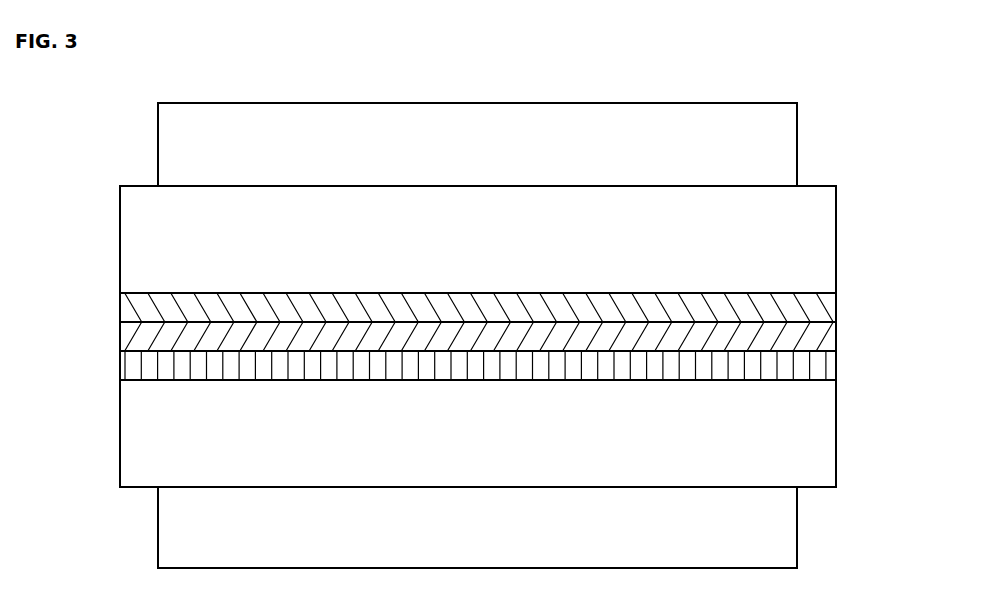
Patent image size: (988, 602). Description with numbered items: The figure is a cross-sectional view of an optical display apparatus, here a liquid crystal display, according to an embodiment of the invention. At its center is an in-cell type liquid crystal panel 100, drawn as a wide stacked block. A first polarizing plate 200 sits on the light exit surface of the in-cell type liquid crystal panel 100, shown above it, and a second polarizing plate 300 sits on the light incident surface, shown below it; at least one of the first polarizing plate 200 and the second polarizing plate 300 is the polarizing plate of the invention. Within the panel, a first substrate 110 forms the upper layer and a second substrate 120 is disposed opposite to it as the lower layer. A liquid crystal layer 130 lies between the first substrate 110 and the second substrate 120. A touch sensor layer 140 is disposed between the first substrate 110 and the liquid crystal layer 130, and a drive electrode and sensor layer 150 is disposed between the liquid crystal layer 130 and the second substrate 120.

The in-cell type liquid crystal panel 100 is at (848, 187).
The first substrate 110 is at (137, 232).
The second substrate 120 is at (127, 445).
The liquid crystal layer 130 is at (128, 340).
The touch sensor layer 140 is at (128, 306).
The drive electrode and sensor layer 150 is at (125, 372).
The first polarizing plate 200 is at (780, 140).
The second polarizing plate 300 is at (780, 535).